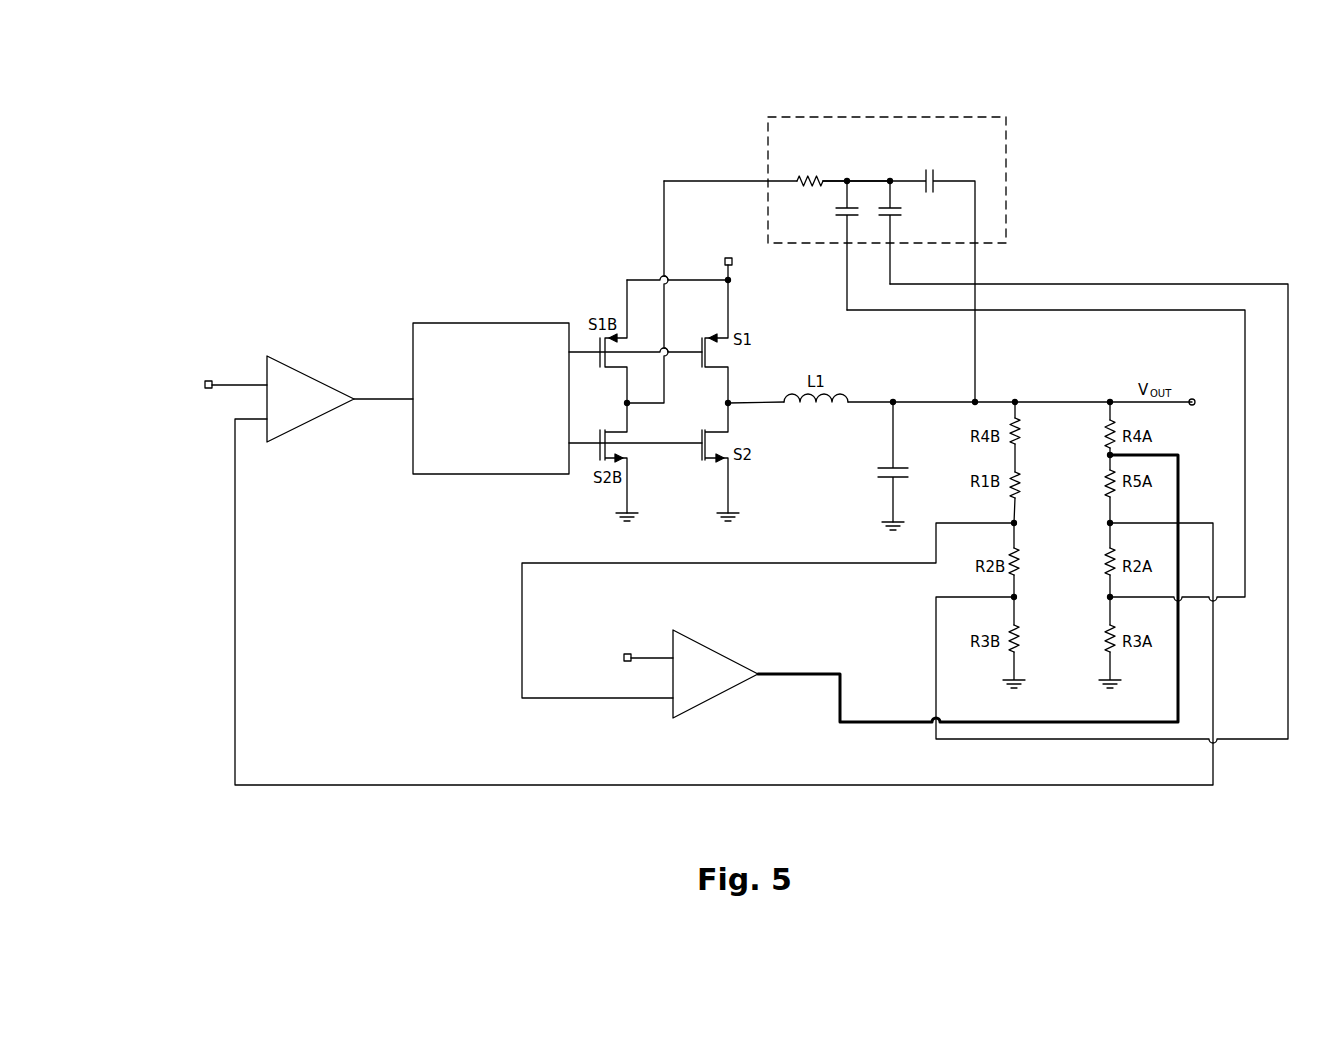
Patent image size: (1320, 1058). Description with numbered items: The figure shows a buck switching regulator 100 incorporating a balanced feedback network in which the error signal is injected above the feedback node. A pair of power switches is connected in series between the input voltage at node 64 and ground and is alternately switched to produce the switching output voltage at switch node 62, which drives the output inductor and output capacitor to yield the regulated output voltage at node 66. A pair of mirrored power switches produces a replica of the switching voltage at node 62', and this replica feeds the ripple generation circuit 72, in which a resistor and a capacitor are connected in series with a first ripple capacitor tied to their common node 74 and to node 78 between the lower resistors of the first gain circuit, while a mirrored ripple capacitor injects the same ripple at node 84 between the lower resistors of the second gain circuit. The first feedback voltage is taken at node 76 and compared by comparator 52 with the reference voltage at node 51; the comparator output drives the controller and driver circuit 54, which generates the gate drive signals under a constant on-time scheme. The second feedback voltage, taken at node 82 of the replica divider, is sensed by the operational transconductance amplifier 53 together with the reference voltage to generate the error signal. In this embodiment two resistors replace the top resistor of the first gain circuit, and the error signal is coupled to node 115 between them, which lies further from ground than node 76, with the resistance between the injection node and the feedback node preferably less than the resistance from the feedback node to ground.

The reference voltage node 51 is at (238, 382).
The comparator 52 is at (305, 423).
The operational transconductance amplifier 53 is at (700, 703).
The controller and driver circuit 54 is at (491, 398).
The switch node 62 is at (738, 389).
The mirrored switch node 62' is at (630, 308).
The input voltage node 64 is at (733, 263).
The output voltage node 66 is at (895, 398).
The ripple generation circuit 72 is at (1006, 143).
The common node 74 is at (848, 179).
The feedback node 76 is at (1108, 525).
The common node 78 is at (1108, 599).
The common node 82 is at (1016, 525).
The node 84 is at (1016, 599).
The buck switching regulator 100 is at (1148, 191).
The error signal injection node 115 is at (1108, 457).